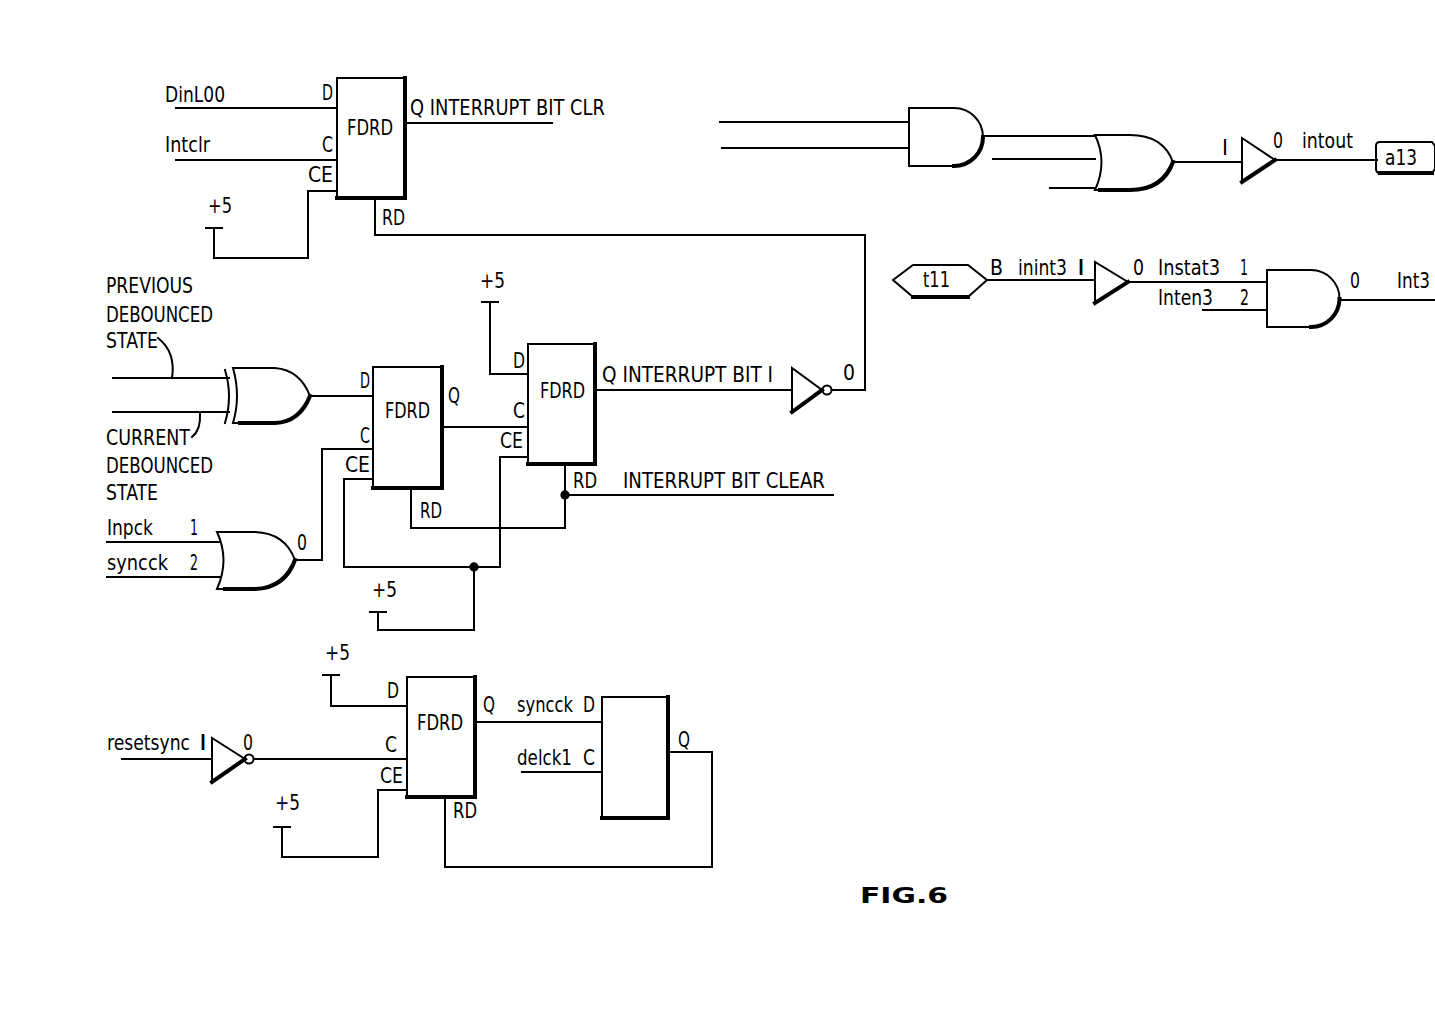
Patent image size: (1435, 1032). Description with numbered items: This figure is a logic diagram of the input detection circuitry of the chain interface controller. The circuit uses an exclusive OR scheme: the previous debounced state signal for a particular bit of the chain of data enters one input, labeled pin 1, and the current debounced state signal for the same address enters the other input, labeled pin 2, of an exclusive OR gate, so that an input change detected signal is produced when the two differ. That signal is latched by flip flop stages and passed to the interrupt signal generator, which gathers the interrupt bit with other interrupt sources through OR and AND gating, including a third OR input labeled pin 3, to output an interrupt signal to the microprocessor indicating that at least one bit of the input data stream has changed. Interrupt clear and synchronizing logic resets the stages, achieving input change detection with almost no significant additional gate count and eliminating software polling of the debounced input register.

The AND gate input pin 1 (INTERRUPT BIT) 1 is at (861, 130).
The XOR gate input pin 2 (current debounced state) 2 is at (220, 386).
The OR gate input pin 3 (Int3) 3 is at (1092, 150).